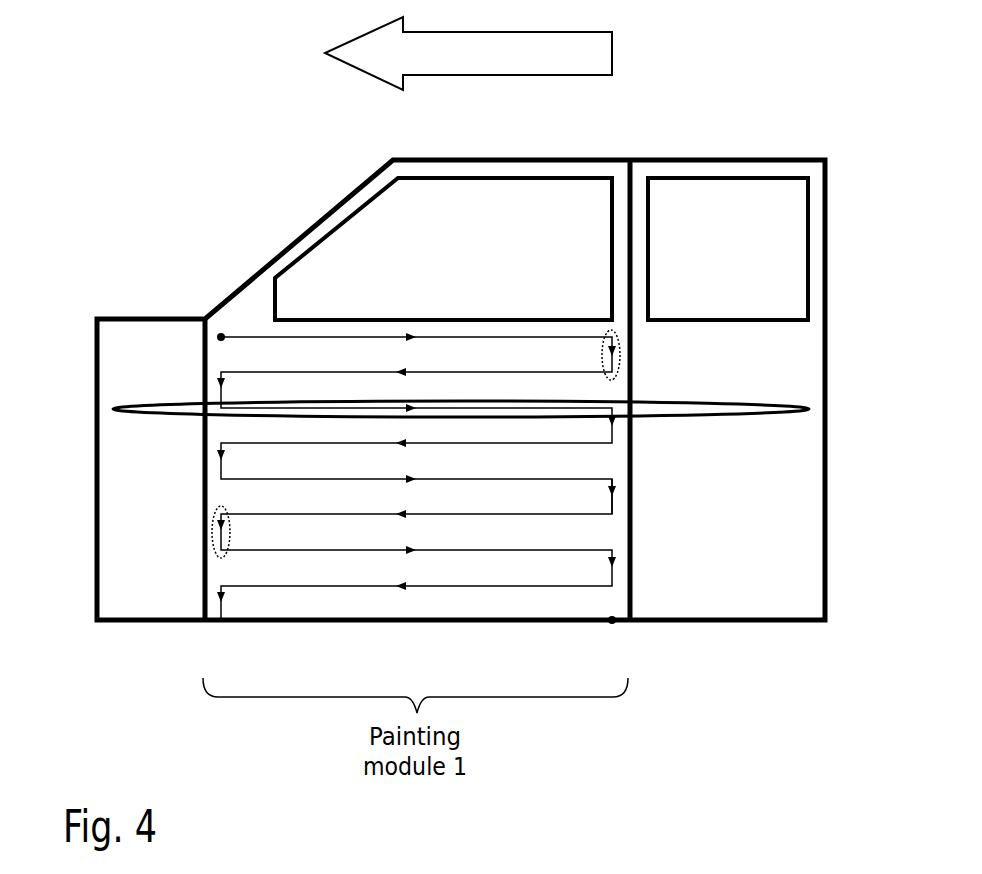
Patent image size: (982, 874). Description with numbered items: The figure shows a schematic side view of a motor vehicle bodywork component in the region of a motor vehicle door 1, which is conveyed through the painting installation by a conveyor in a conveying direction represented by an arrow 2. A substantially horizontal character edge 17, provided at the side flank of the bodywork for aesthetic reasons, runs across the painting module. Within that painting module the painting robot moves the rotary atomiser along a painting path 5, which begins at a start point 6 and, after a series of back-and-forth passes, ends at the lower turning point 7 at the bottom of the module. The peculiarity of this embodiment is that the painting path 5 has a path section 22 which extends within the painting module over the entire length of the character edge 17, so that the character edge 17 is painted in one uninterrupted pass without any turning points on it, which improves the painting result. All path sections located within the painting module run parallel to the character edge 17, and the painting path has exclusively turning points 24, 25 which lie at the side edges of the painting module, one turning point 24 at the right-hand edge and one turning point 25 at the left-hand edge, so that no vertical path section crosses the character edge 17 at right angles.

The motor vehicle door 1 is at (316, 226).
The arrow 2 is at (362, 36).
The painting path 5 is at (614, 503).
The start point 6 is at (220, 335).
The turning point 7 is at (612, 624).
The character edge 17 is at (185, 405).
The path section 22 is at (330, 407).
The turning point 24 is at (621, 350).
The turning point 25 is at (212, 531).